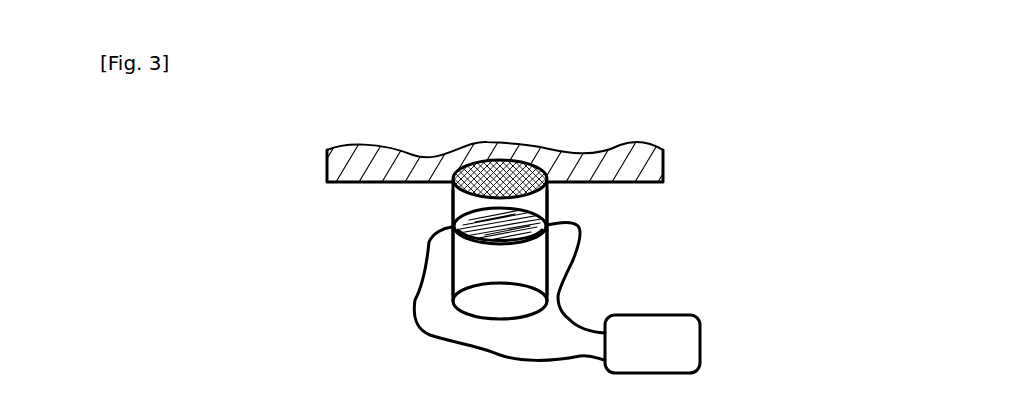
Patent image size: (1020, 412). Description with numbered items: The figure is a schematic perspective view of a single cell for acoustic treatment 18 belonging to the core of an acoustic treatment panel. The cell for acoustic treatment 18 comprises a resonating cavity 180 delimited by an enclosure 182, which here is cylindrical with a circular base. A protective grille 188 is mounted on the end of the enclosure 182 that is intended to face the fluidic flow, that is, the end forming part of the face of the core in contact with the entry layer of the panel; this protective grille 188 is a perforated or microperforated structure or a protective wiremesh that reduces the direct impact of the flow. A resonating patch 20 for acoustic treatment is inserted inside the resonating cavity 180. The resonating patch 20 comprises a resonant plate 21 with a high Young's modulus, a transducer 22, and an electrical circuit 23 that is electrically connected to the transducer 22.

The cell for acoustic treatment 18 is at (452, 258).
The resonating cavity 180 is at (536, 267).
The enclosure 182 is at (548, 194).
The protective grille 188 is at (487, 160).
The resonating patch 20 is at (609, 229).
The resonant plate 21 is at (497, 243).
The transducer 22 is at (466, 215).
The electrical circuit 23 is at (643, 353).